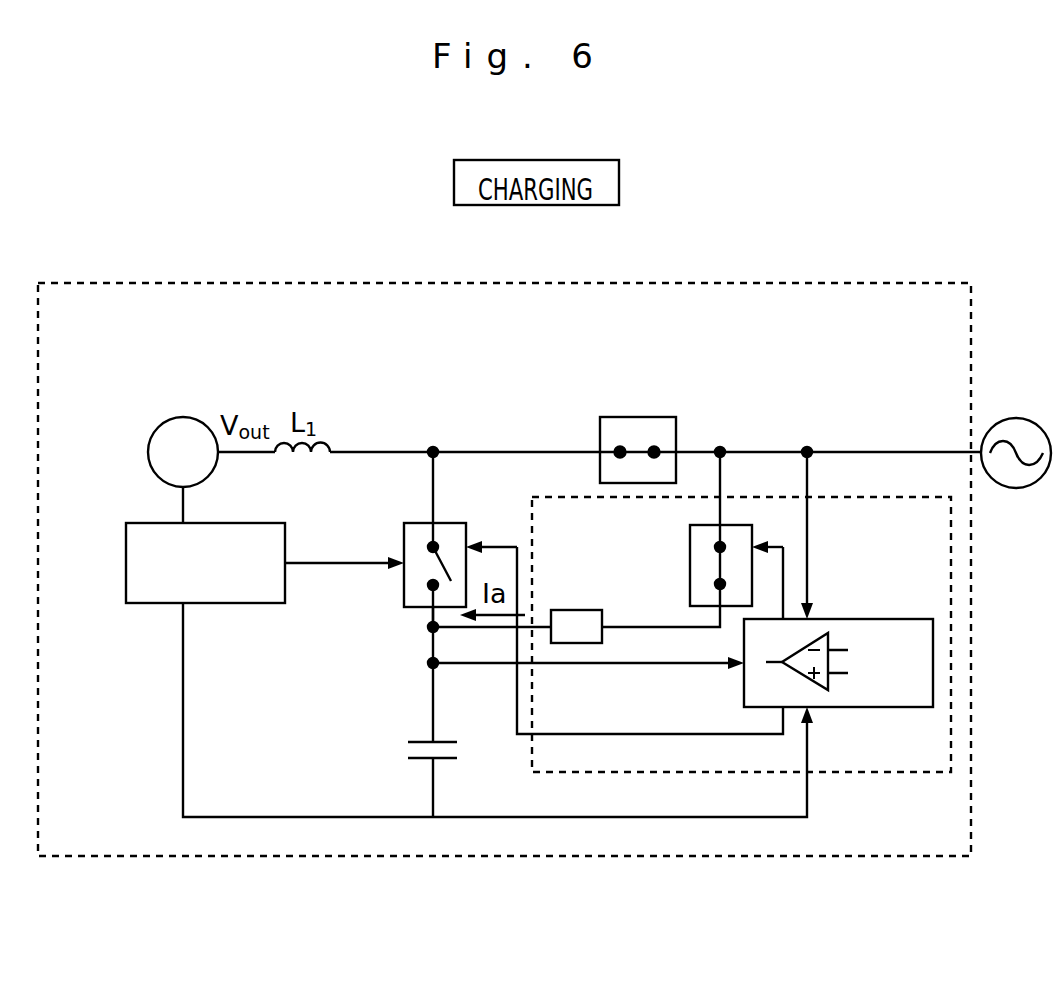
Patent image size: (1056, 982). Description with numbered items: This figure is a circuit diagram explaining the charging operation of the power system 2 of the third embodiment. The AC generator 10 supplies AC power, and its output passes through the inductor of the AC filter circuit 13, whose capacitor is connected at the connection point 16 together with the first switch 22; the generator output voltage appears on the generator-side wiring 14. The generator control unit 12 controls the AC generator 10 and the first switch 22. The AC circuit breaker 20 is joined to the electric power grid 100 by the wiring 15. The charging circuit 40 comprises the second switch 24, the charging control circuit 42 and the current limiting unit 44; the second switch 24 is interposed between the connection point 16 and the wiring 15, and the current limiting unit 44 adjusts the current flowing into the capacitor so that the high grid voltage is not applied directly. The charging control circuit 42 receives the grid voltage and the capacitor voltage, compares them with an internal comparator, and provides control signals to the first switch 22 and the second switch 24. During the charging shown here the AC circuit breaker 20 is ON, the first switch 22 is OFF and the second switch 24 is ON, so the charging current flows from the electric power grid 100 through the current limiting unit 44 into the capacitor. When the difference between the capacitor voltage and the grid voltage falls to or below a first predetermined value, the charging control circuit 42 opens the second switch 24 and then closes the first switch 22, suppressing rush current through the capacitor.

The power system 2 is at (167, 283).
The AC generator 10 is at (183, 417).
The generator control unit 12 is at (126, 563).
The AC filter circuit 13 is at (362, 630).
The output line 14 is at (367, 450).
The wiring 15 is at (759, 450).
The connection point 16 is at (433, 627).
The AC circuit breaker 20 is at (633, 417).
The first switch 22 is at (404, 528).
The second switch 24 is at (690, 547).
The charging circuit 40 is at (902, 772).
The charging control circuit 42 is at (919, 619).
The current limiting unit 44 is at (576, 610).
The electric power grid 100 is at (1016, 418).